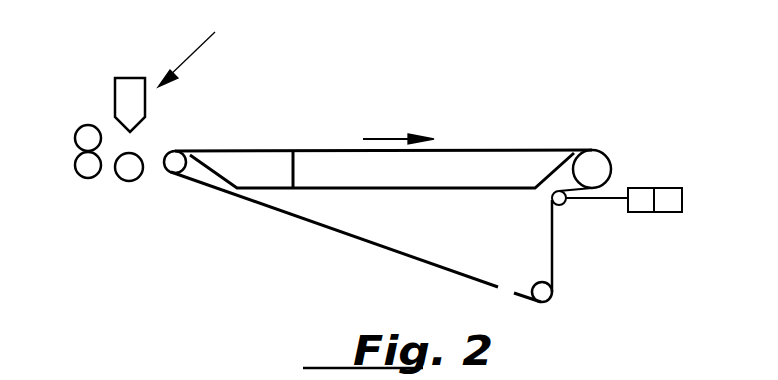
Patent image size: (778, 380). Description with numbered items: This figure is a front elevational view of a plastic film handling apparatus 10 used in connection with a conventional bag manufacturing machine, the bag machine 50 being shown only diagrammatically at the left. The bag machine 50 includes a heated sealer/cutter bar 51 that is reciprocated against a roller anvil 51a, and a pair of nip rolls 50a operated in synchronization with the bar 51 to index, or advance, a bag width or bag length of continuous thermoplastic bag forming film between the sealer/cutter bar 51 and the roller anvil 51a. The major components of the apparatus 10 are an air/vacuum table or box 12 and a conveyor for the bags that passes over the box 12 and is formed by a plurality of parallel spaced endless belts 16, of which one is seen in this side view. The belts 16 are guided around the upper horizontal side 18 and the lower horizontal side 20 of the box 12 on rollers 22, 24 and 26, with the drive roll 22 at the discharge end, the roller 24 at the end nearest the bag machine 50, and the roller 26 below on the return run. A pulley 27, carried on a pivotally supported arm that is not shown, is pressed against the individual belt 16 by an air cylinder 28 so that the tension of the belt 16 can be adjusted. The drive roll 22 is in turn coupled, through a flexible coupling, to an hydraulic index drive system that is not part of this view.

The plastic film handling apparatus 10 is at (322, 117).
The air/vacuum table or box 12 is at (497, 167).
The endless belts 16 is at (325, 232).
The upper horizontal side 18 is at (443, 150).
The lower horizontal side 20 is at (430, 190).
The drive roll 22 is at (594, 167).
The roller 24 is at (174, 170).
The roller 26 is at (548, 292).
The pulley 27 is at (561, 207).
The air cylinder 28 is at (668, 207).
The bag machine 50 is at (197, 52).
The nip rolls 50a is at (81, 137).
The heated sealer/cutter bar 51 is at (125, 88).
The roller anvil 51a is at (126, 170).